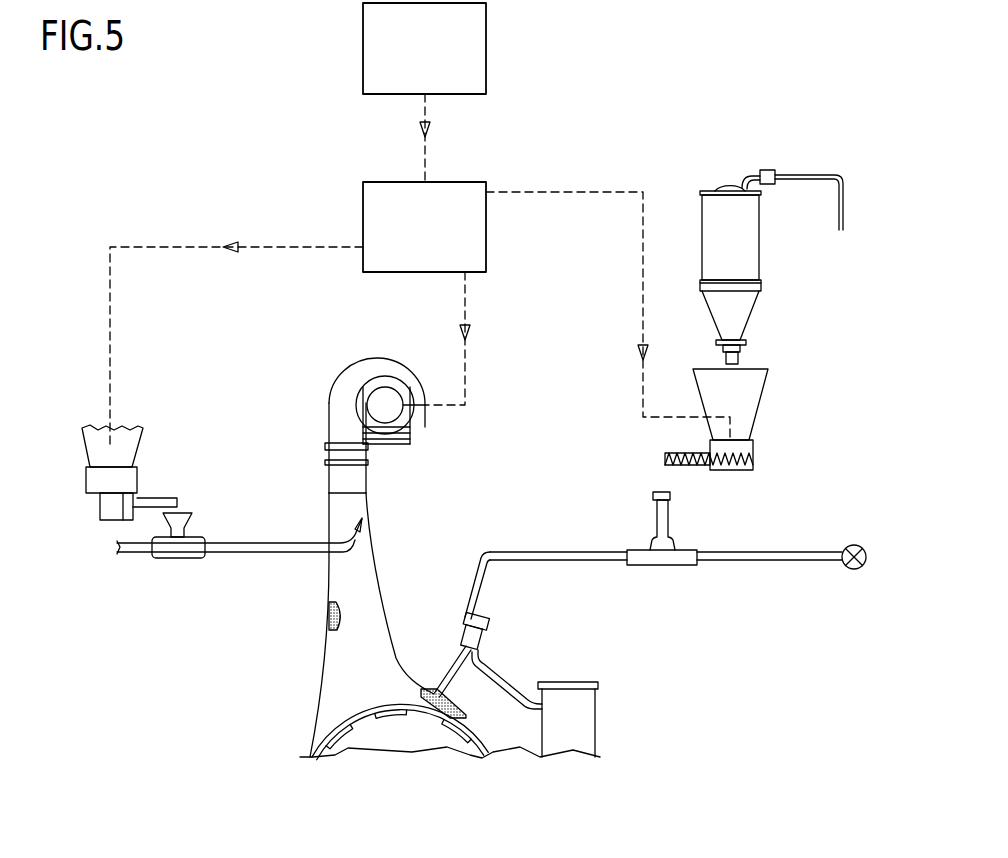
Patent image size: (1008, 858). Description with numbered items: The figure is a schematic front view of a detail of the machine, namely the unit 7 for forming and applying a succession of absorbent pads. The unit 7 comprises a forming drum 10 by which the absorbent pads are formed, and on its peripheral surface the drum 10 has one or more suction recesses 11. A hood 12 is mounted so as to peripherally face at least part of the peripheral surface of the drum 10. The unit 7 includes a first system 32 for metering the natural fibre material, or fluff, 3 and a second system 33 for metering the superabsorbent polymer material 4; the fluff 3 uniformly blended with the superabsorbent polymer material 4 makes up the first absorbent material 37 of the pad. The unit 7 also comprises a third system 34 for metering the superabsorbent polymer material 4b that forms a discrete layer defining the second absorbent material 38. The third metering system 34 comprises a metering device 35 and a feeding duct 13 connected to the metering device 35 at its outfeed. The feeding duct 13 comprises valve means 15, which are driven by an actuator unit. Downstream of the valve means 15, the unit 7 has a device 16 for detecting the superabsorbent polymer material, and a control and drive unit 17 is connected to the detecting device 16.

The detecting device 16 is at (436, 63).
The control and drive unit 17 is at (436, 238).
The unit for forming and applying absorbent pads 7 is at (318, 362).
The first metering system 32 is at (384, 386).
The second metering system 33 is at (128, 425).
The third metering system 34 is at (782, 278).
The metering device 35 is at (737, 388).
The hood 12 is at (360, 570).
The feeding duct 13 is at (535, 550).
The valve means 15 is at (473, 637).
The first absorbent material 37 is at (275, 616).
The natural fibre material (fluff) 3 is at (275, 632).
The superabsorbent polymer material (SAP) 4 is at (325, 630).
The suction recesses 11 is at (377, 707).
The forming drum 10 is at (348, 748).
The superabsorbent polymer material (SAP) of the discrete layer 4b is at (434, 702).
The second absorbent material 38 is at (450, 766).